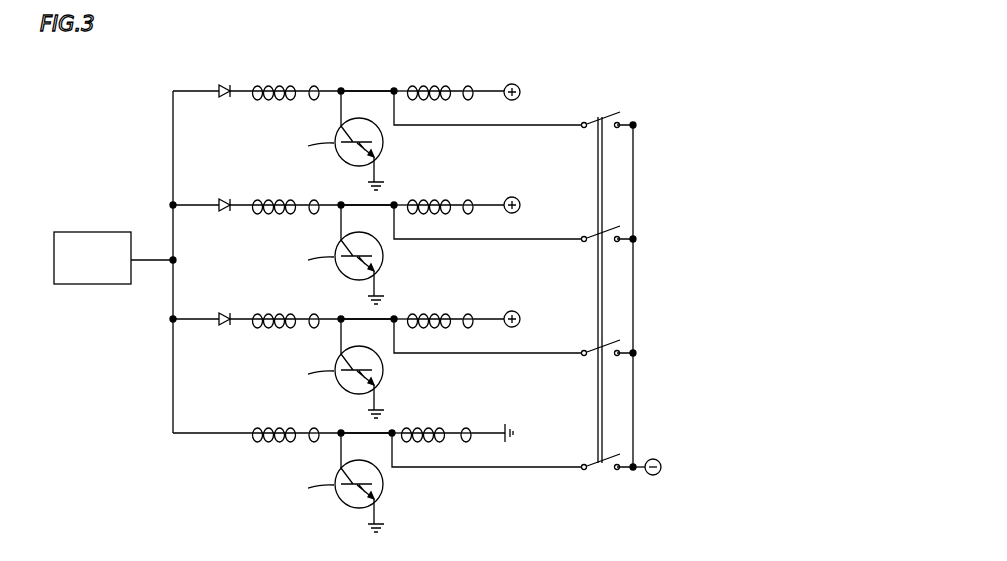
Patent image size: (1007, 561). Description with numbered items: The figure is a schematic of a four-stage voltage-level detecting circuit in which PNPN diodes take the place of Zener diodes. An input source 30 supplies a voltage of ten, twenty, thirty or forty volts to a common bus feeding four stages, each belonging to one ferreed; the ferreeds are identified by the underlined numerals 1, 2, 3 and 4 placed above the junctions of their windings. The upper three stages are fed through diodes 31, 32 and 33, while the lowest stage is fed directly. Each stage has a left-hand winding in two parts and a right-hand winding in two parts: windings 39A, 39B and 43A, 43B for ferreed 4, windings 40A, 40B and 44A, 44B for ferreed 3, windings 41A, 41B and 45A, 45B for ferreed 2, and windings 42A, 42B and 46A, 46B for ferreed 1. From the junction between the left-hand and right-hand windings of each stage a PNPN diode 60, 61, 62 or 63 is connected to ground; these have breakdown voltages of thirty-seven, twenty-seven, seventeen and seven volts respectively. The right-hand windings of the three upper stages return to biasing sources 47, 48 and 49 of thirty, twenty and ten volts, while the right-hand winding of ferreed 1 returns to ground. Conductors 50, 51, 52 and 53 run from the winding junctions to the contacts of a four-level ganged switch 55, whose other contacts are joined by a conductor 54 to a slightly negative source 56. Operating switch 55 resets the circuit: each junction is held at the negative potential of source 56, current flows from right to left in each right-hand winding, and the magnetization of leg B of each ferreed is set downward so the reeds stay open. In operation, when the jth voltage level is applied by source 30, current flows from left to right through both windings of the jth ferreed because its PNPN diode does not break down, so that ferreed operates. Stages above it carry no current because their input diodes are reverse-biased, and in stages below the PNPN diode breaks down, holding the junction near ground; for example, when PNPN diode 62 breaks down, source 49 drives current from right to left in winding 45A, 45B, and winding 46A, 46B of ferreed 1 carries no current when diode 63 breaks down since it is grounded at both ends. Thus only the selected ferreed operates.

The ferreed 1 is at (367, 429).
The ferreed 2 is at (366, 313).
The ferreed 3 is at (366, 199).
The ferreed 4 is at (357, 83).
The input source 30 is at (108, 232).
The diode 31 is at (231, 87).
The diode 32 is at (232, 199).
The diode 33 is at (231, 313).
The winding 39A is at (275, 83).
The winding 39B is at (315, 83).
The winding 40A is at (275, 197).
The winding 40B is at (315, 197).
The winding 41A is at (275, 311).
The winding 41B is at (315, 311).
The winding 42A is at (275, 425).
The winding 42B is at (315, 425).
The winding 43A is at (478, 83).
The winding 43B is at (423, 83).
The winding 44A is at (478, 197).
The winding 44B is at (423, 197).
The winding 45A is at (478, 311).
The winding 45B is at (423, 311).
The winding 46A is at (480, 425).
The winding 46B is at (419, 425).
The source 47 is at (520, 87).
The source 48 is at (515, 200).
The source 49 is at (517, 314).
The conductor 50 is at (483, 126).
The conductor 51 is at (487, 240).
The conductor 52 is at (498, 354).
The conductor 53 is at (495, 468).
The common conductor 54 is at (633, 303).
The four-level ganged switch 55 is at (596, 300).
The source 56 is at (650, 476).
The PNPN diode 60 is at (384, 146).
The PNPN diode 61 is at (384, 260).
The PNPN diode 62 is at (384, 374).
The PNPN diode 63 is at (384, 488).